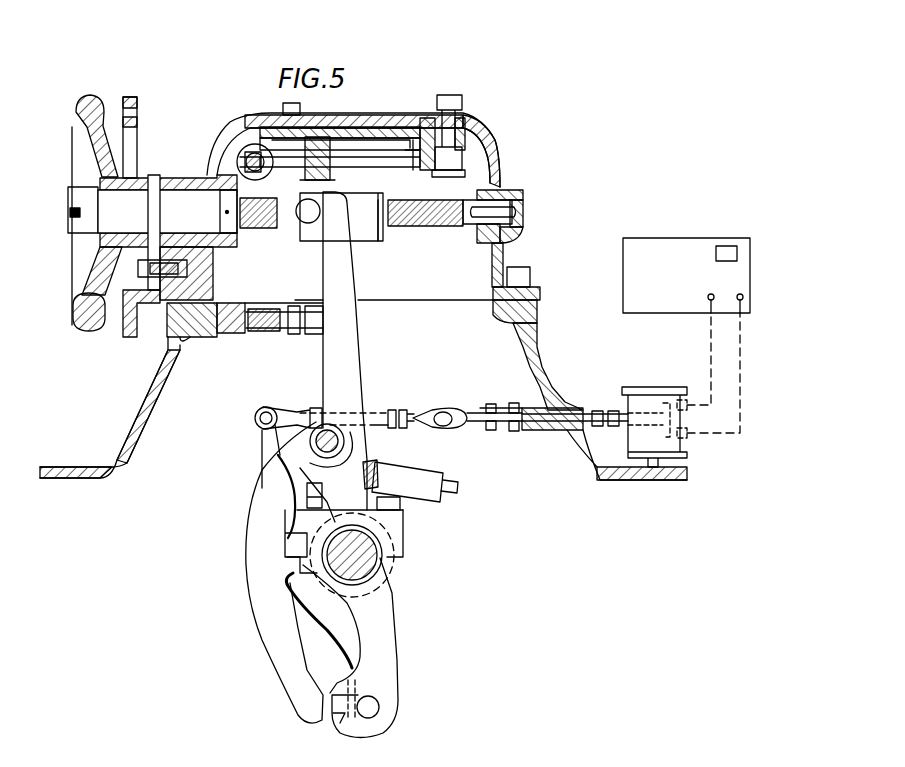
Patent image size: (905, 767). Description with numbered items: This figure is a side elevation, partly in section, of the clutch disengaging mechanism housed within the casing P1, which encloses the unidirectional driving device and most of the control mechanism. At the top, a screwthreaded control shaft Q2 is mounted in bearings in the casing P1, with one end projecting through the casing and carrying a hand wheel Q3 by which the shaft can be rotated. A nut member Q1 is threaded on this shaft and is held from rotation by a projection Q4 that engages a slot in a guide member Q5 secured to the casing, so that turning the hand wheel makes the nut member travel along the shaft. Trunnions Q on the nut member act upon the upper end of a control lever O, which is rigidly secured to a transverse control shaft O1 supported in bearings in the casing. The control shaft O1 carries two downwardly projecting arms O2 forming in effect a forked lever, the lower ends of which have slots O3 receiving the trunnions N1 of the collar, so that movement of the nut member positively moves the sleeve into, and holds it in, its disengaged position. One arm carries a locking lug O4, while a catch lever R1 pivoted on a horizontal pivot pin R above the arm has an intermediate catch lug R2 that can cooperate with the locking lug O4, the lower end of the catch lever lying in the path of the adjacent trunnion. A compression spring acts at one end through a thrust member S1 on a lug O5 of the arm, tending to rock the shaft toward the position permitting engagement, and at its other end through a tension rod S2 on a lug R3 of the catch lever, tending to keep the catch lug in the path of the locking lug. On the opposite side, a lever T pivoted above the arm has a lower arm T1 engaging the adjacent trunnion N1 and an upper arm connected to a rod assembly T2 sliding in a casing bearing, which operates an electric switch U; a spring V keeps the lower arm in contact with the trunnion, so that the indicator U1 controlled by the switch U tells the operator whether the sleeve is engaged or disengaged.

The hand wheel Q3 is at (87, 105).
The projection Q4 is at (318, 137).
The guide member Q5 is at (368, 140).
The trunnions Q is at (310, 216).
The nut member Q1 is at (364, 227).
The screwthreaded control shaft Q2 is at (446, 230).
The control lever O is at (343, 350).
The casing P1 is at (150, 407).
The pivot pin R is at (343, 427).
The tension rod S2 is at (360, 440).
The rod assembly T2 is at (437, 418).
The spring V is at (500, 411).
The electric switch U is at (647, 401).
The indicator U1 is at (633, 296).
The lever T is at (270, 452).
The lug R3 is at (323, 475).
The lug O5 is at (369, 480).
The thrust member S1 is at (352, 495).
The locking lug O4 is at (297, 541).
The catch lug R2 is at (298, 573).
The catch lever R1 is at (265, 604).
The lower arm T1 is at (295, 634).
The transverse control shaft O1 is at (377, 573).
The arms O2 is at (380, 638).
The trunnions N1 is at (380, 708).
The slots O3 is at (340, 724).